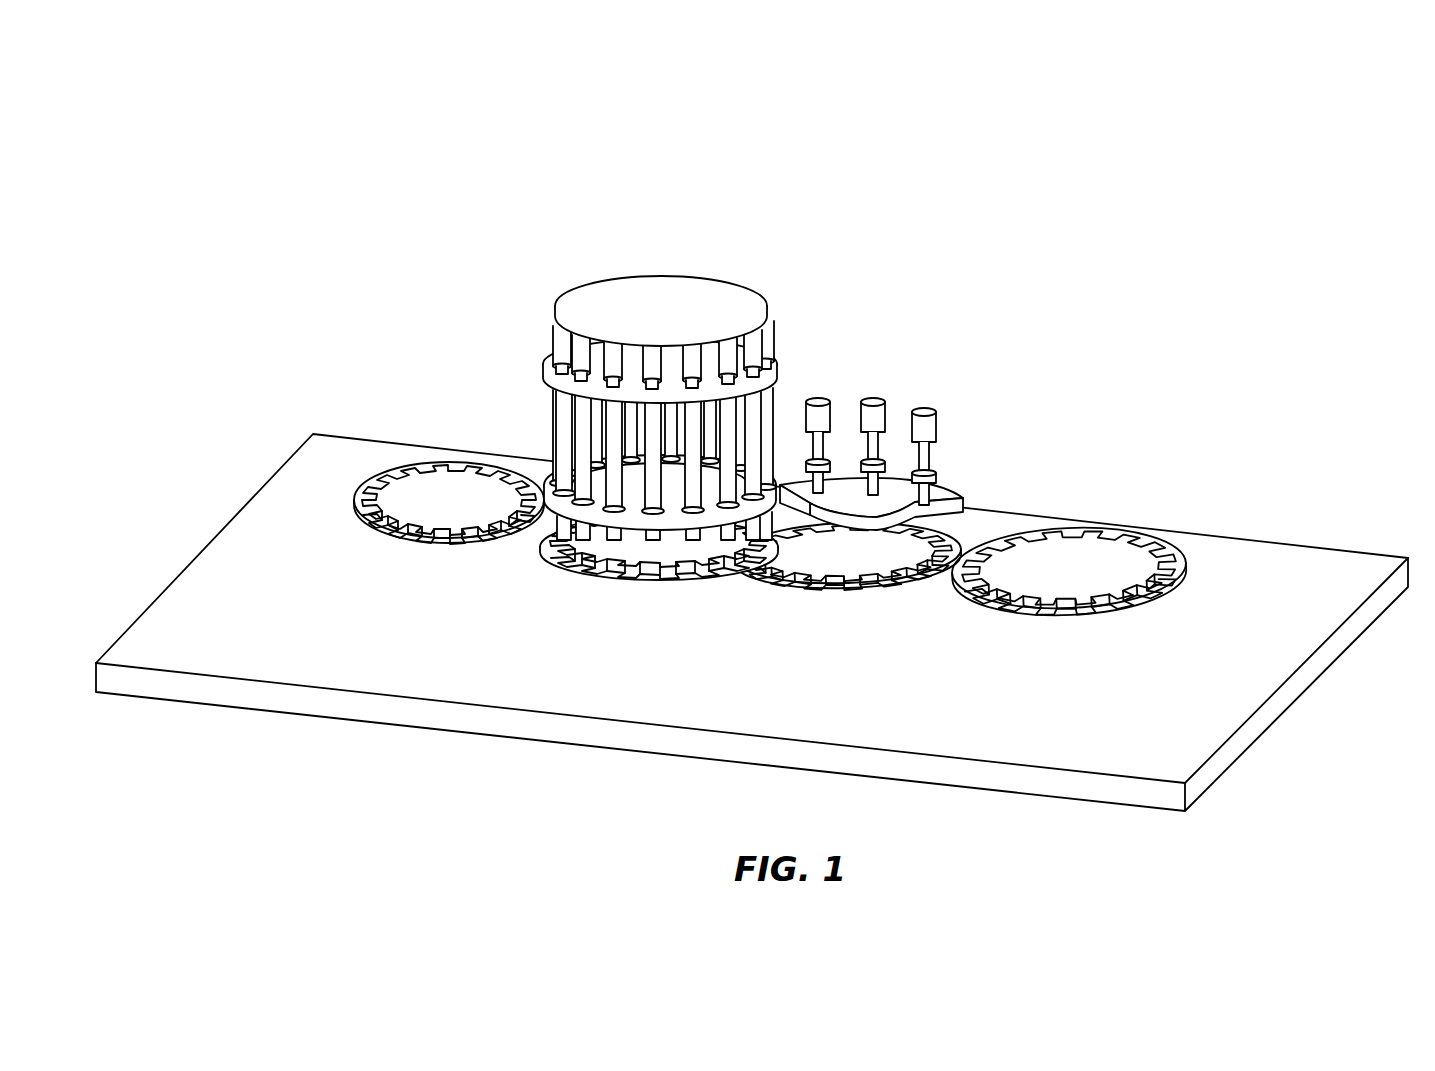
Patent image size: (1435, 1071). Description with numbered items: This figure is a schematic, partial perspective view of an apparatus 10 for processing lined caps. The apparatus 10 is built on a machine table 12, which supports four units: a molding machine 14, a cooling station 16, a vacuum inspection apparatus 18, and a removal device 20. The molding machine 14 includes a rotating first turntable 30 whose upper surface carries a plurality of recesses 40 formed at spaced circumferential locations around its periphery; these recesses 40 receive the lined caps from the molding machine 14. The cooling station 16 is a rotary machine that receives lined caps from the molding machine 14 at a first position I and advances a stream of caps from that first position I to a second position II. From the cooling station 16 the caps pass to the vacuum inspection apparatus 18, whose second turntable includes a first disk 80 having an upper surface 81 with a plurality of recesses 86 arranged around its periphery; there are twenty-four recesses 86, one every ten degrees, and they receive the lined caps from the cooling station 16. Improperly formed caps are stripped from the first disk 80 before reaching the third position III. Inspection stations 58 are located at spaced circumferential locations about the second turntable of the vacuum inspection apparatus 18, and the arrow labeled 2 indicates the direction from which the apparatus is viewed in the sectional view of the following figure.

The viewing direction of FIG. 2 is at (893, 236).
The apparatus 10 is at (1182, 325).
The machine table 12 is at (1283, 702).
The molding machine 14 is at (1185, 555).
The cooling station 16 is at (963, 467).
The vacuum inspection apparatus 18 is at (678, 420).
The removal device 20 is at (373, 430).
The first turntable 30 is at (848, 604).
The recesses 40 is at (880, 582).
The inspection stations 58 is at (697, 367).
The first disk 80 is at (659, 590).
The upper surface 81 is at (697, 577).
The recesses 86 is at (650, 574).
The first position I is at (965, 545).
The second position II is at (737, 563).
The third position III is at (547, 482).